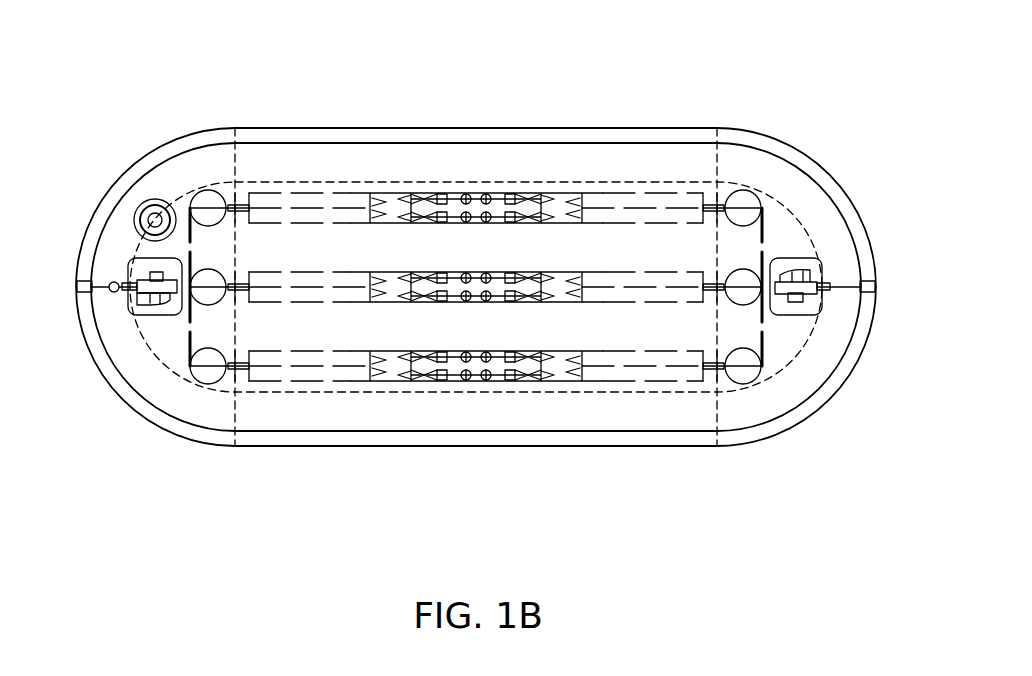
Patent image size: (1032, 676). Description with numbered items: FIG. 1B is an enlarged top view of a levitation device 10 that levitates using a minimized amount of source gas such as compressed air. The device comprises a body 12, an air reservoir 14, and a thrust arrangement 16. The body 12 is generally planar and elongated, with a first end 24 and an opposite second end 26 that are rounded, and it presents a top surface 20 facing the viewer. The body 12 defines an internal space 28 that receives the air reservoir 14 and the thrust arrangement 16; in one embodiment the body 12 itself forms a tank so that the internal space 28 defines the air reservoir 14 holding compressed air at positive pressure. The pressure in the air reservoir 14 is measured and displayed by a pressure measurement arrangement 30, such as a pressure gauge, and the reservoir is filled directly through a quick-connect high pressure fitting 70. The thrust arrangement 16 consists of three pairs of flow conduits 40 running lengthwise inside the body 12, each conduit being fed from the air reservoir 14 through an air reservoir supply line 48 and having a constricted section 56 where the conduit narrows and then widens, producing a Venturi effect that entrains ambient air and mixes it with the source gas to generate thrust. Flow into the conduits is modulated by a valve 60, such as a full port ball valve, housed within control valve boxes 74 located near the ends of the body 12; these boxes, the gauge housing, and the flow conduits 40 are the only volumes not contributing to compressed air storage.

The levitation device 10 is at (586, 97).
The body 12 is at (800, 153).
The air reservoir 14 is at (352, 158).
The thrust arrangement 16 is at (214, 404).
The top surface 20 is at (682, 424).
The first end 24 is at (77, 318).
The second end 26 is at (878, 305).
The internal space 28 is at (350, 412).
The pressure measurement arrangement 30 is at (138, 209).
The flow conduits 40 is at (640, 185).
The air reservoir supply line 48 is at (768, 232).
The constricted section 56 is at (448, 280).
The valve 60 is at (140, 275).
The quick-connect high pressure fitting 70 is at (76, 288).
The control valve boxes 74 is at (148, 265).